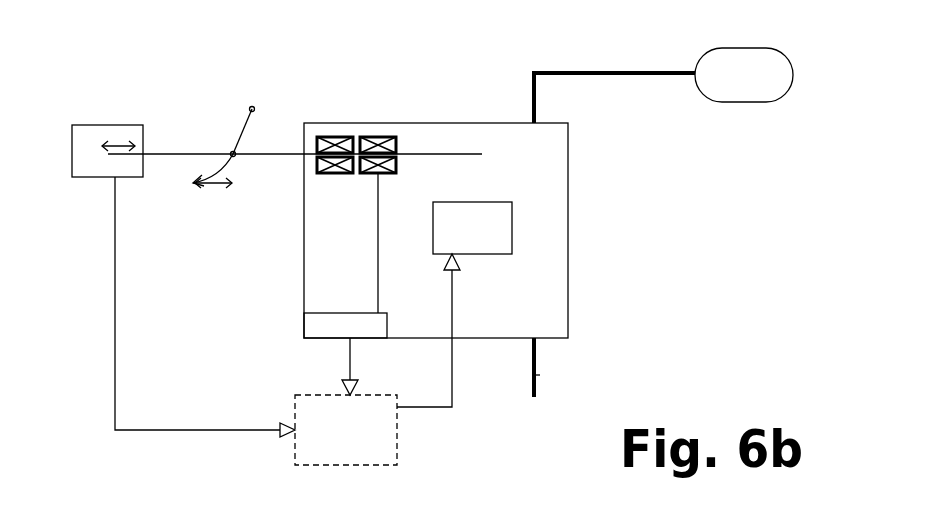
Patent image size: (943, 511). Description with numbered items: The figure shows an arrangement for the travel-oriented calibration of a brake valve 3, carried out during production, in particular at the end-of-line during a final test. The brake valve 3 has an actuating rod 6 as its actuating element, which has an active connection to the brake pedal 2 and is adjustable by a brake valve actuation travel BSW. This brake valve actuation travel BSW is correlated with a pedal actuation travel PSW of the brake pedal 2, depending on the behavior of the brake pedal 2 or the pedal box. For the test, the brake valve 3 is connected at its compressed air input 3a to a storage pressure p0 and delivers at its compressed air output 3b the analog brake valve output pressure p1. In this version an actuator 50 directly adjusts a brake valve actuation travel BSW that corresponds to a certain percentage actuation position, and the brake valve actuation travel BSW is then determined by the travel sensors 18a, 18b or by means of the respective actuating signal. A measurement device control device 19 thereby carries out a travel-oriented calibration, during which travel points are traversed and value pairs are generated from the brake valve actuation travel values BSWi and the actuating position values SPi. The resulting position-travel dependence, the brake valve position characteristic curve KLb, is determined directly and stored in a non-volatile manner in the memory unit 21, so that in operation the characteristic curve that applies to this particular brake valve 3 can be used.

The brake valve 3 is at (487, 122).
The actuating rod 6 is at (418, 152).
The actuator 50 is at (160, 130).
The brake valve actuation travel BSW is at (118, 140).
The brake pedal 2 is at (243, 127).
The pedal actuation travel PSW is at (213, 186).
The travel sensor 18a is at (330, 137).
The travel sensor 18b is at (378, 137).
The brake valve actuation travel values BSWi is at (377, 240).
The measurement device control device 19 is at (366, 442).
The actuating position values SPi is at (113, 312).
The memory unit 21 is at (482, 255).
The brake valve position characteristic curve KLb is at (450, 242).
The compressed air input 3a is at (536, 121).
The storage pressure p0 is at (717, 75).
The compressed air output 3b is at (537, 343).
The brake valve output pressure p1 is at (537, 380).